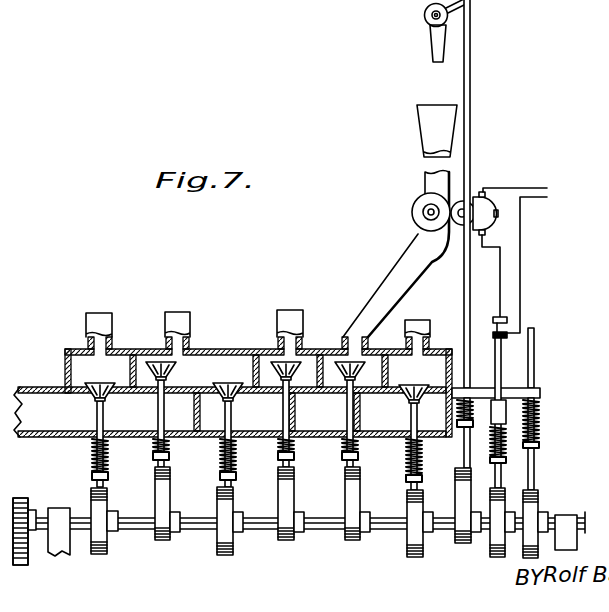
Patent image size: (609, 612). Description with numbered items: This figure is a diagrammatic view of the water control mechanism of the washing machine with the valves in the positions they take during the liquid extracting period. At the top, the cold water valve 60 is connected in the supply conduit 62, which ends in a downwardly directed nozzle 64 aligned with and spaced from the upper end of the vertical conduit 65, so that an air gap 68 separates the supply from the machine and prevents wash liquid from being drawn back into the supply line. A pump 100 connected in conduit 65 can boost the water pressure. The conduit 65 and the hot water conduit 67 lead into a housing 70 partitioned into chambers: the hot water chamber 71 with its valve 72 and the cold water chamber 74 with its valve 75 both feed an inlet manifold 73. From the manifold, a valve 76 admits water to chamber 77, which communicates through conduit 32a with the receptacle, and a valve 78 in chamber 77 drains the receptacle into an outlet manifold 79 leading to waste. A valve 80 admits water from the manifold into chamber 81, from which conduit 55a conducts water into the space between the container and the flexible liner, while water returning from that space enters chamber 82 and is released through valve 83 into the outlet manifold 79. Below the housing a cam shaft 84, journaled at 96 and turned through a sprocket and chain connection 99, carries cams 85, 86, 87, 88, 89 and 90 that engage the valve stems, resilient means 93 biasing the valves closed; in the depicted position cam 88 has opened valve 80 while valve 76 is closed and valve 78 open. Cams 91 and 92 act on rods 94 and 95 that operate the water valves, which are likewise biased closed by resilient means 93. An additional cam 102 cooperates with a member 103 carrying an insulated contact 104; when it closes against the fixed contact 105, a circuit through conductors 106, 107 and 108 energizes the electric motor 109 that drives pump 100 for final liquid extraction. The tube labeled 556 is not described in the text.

The conduit 32a is at (166, 318).
The conduit 55a is at (280, 323).
The supply tube 556 is at (100, 312).
The valve 60 is at (427, 22).
The conduit 62 is at (423, 2).
The nozzle 64 is at (432, 49).
The vertical conduit 65 is at (412, 265).
The vertical conduit 67 is at (423, 327).
The air gap 68 is at (435, 85).
The housing 70 is at (66, 362).
The chamber 71 is at (417, 393).
The valve 72 is at (410, 390).
The inlet manifold 73 is at (262, 422).
The chamber 74 is at (372, 360).
The valve 75 is at (346, 380).
The valve 76 is at (220, 402).
The chamber 77 is at (227, 371).
The valve 78 is at (180, 364).
The outlet manifold 79 is at (230, 412).
The valve 80 is at (282, 380).
The chamber 81 is at (308, 358).
The chamber 82 is at (100, 371).
The valve 83 is at (98, 400).
The cam shaft 84 is at (317, 522).
The cam 85 is at (98, 555).
The cam 86 is at (162, 540).
The cam 87 is at (225, 555).
The cam 88 is at (290, 543).
The cam 89 is at (352, 542).
The cam 90 is at (412, 557).
The cam 91 is at (467, 543).
The cam 92 is at (537, 500).
The resilient means 93 is at (104, 456).
The rod 94 is at (472, 103).
The rod 95 is at (537, 368).
The journal 96 is at (58, 512).
The sprocket and chain connection 99 is at (28, 560).
The pump 100 is at (418, 212).
The cam 102 is at (497, 557).
The member 103 is at (506, 380).
The contact 104 is at (493, 335).
The fixed contact 105 is at (507, 318).
The conductor 106 is at (522, 282).
The conductor 107 is at (500, 268).
The conductor 108 is at (519, 176).
The electric motor 109 is at (478, 193).